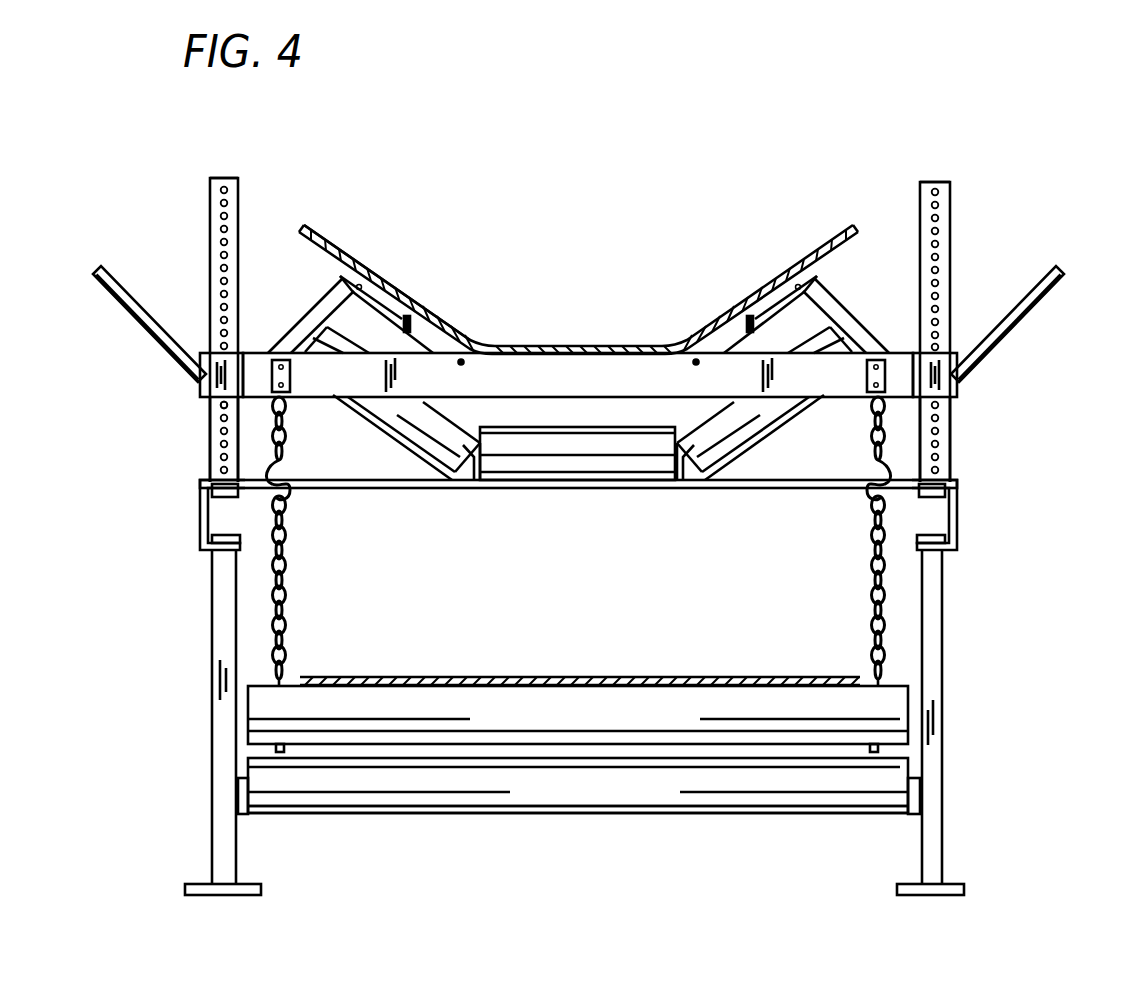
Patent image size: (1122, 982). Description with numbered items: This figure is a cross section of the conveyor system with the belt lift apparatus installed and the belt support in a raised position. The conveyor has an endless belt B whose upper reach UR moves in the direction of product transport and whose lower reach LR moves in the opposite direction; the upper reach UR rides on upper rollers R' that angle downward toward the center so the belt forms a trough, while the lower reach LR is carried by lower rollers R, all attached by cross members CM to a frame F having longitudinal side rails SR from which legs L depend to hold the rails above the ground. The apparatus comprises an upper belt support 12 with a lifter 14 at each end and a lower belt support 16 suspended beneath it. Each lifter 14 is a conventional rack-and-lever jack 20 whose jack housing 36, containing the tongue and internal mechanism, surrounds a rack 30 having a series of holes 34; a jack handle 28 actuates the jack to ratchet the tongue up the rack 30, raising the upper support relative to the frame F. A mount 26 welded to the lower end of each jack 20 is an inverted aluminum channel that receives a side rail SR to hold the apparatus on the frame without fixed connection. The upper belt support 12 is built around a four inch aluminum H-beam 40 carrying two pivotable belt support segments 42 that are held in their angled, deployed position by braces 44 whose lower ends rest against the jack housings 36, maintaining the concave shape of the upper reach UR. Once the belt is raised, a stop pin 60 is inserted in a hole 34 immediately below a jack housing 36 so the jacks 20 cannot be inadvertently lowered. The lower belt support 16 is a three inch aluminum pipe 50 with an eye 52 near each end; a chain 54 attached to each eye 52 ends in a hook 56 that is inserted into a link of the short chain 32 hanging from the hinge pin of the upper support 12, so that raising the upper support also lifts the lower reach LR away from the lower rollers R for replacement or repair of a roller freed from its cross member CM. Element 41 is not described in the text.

The upper belt support 12 is at (590, 352).
The lifter 14 is at (210, 202).
The lower belt support 16 is at (596, 760).
The rack-and-lever jack 20 is at (210, 277).
The mount 26 is at (205, 498).
The jack handle 28 is at (137, 318).
The rack 30 is at (240, 180).
The chain 32 is at (287, 447).
The holes 34 is at (228, 242).
The jack housing 36 is at (200, 378).
The H-beam 40 is at (660, 398).
The support arm 41 is at (846, 314).
The belt support segments 42 is at (378, 292).
The braces 44 is at (298, 335).
The aluminum pipe 50 is at (712, 760).
The eye 52 is at (292, 685).
The chain 54 is at (290, 590).
The hook 56 is at (292, 492).
The stop pin 60 is at (214, 405).
The endless belt B is at (505, 340).
The upper reach UR is at (340, 242).
The lower reach LR is at (475, 684).
The cross members CM is at (565, 485).
The upper rollers R' is at (578, 465).
The lower rollers R is at (578, 836).
The side rails SR is at (208, 546).
The frame F is at (950, 540).
The legs L is at (943, 668).